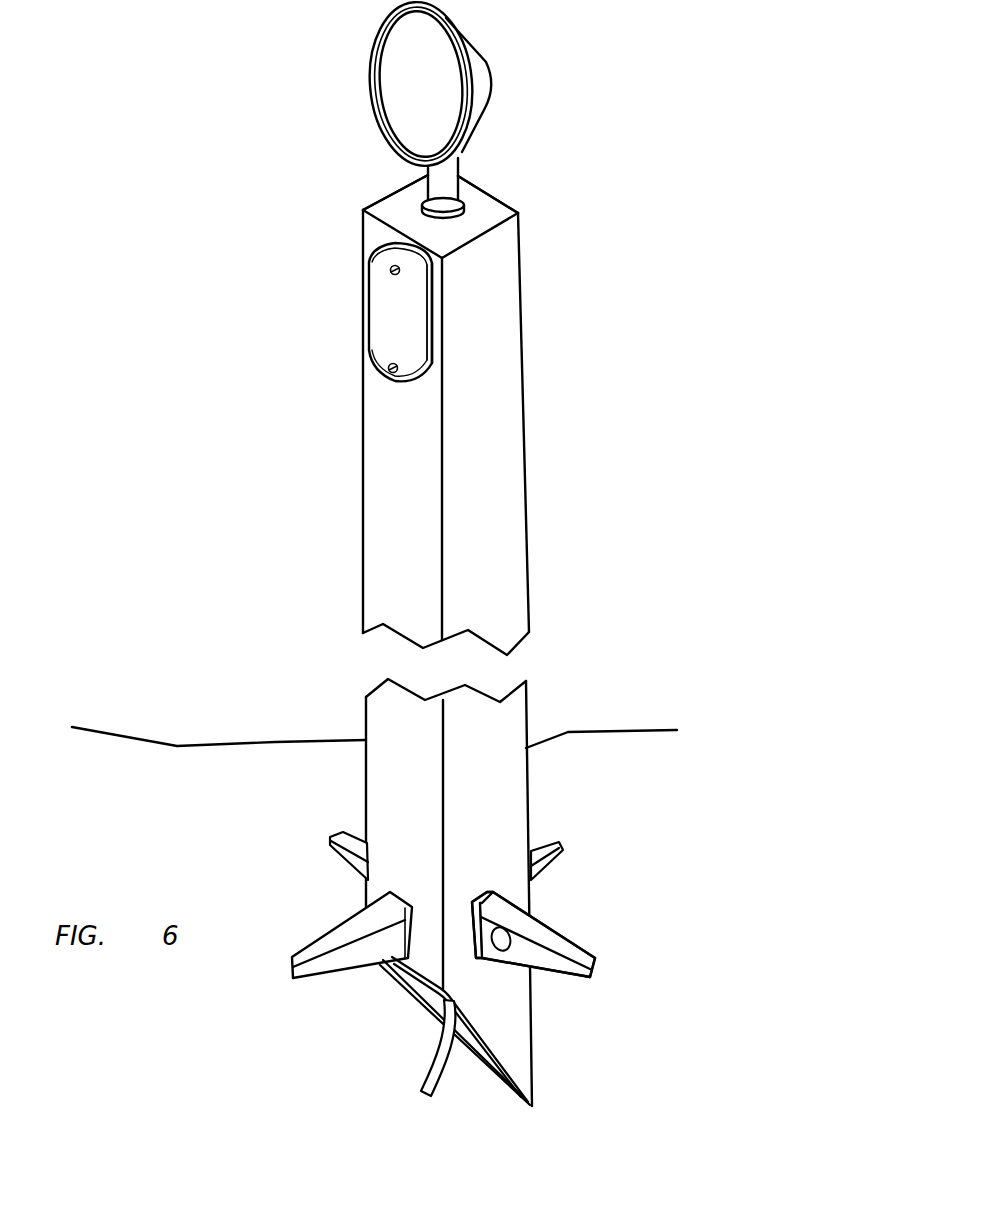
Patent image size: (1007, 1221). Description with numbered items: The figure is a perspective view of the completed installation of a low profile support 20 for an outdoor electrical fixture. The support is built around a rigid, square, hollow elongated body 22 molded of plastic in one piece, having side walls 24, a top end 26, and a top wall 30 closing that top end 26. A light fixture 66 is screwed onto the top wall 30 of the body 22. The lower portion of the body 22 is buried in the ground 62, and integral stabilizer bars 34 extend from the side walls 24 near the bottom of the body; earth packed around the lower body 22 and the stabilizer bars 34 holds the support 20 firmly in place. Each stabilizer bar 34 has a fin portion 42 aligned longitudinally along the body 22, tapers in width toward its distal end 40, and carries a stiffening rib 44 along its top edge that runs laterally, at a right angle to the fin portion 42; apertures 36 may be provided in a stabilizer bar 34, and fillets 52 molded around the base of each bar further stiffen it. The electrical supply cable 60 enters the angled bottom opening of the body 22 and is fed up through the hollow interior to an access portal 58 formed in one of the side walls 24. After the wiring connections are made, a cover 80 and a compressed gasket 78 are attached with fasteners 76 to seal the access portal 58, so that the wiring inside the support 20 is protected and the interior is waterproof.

The low profile support 20 is at (599, 507).
The hollow elongated body 22 is at (527, 391).
The side walls 24 is at (496, 484).
The top end 26 is at (493, 205).
The top wall 30 is at (395, 210).
The stabilizer bars 34 is at (562, 937).
The apertures 36 is at (502, 945).
The distal end 40 is at (600, 968).
The fin portion 42 is at (552, 963).
The stiffening rib 44 is at (538, 933).
The fillets 52 is at (472, 896).
The access portal 58 is at (436, 341).
The electrical supply cable 60 is at (433, 1073).
The ground 62 is at (597, 745).
The light fixture 66 is at (483, 91).
The fasteners 76 is at (389, 370).
The gasket 78 is at (436, 293).
The cover 80 is at (378, 315).